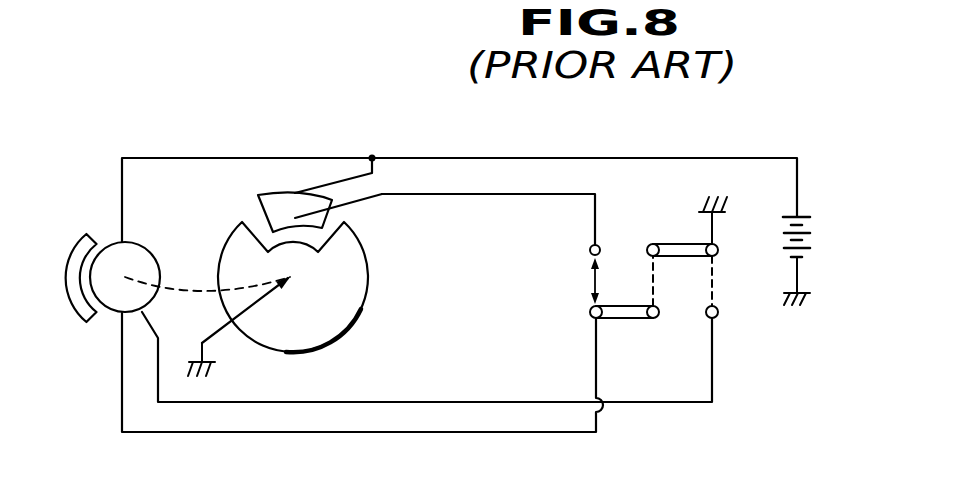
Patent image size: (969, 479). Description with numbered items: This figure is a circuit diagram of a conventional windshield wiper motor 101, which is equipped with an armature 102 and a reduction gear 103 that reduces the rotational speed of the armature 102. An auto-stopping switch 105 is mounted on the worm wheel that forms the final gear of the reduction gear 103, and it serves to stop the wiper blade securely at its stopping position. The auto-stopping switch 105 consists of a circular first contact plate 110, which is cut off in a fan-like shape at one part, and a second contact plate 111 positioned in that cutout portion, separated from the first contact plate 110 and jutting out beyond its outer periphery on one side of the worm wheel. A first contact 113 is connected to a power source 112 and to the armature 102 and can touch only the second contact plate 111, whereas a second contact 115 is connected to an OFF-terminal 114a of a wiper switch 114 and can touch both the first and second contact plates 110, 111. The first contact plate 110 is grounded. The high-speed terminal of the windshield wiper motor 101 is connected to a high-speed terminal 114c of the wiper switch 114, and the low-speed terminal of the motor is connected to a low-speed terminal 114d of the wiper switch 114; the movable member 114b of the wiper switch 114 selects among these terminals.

The windshield wiper motor 101 is at (357, 147).
The armature 102 is at (110, 313).
The reduction gear 103 is at (198, 297).
The auto-stopping switch 105 is at (375, 270).
The first contact plate 110 is at (355, 317).
The second contact plate 111 is at (272, 198).
The power source 112 is at (810, 241).
The first contact 113 is at (323, 188).
The wiper switch 114 is at (650, 292).
The OFF-terminal 114a is at (598, 246).
The movable contact 114b is at (590, 283).
The high-speed terminal 114c is at (717, 317).
The low-speed terminal 114d is at (628, 319).
The second contact 115 is at (386, 194).